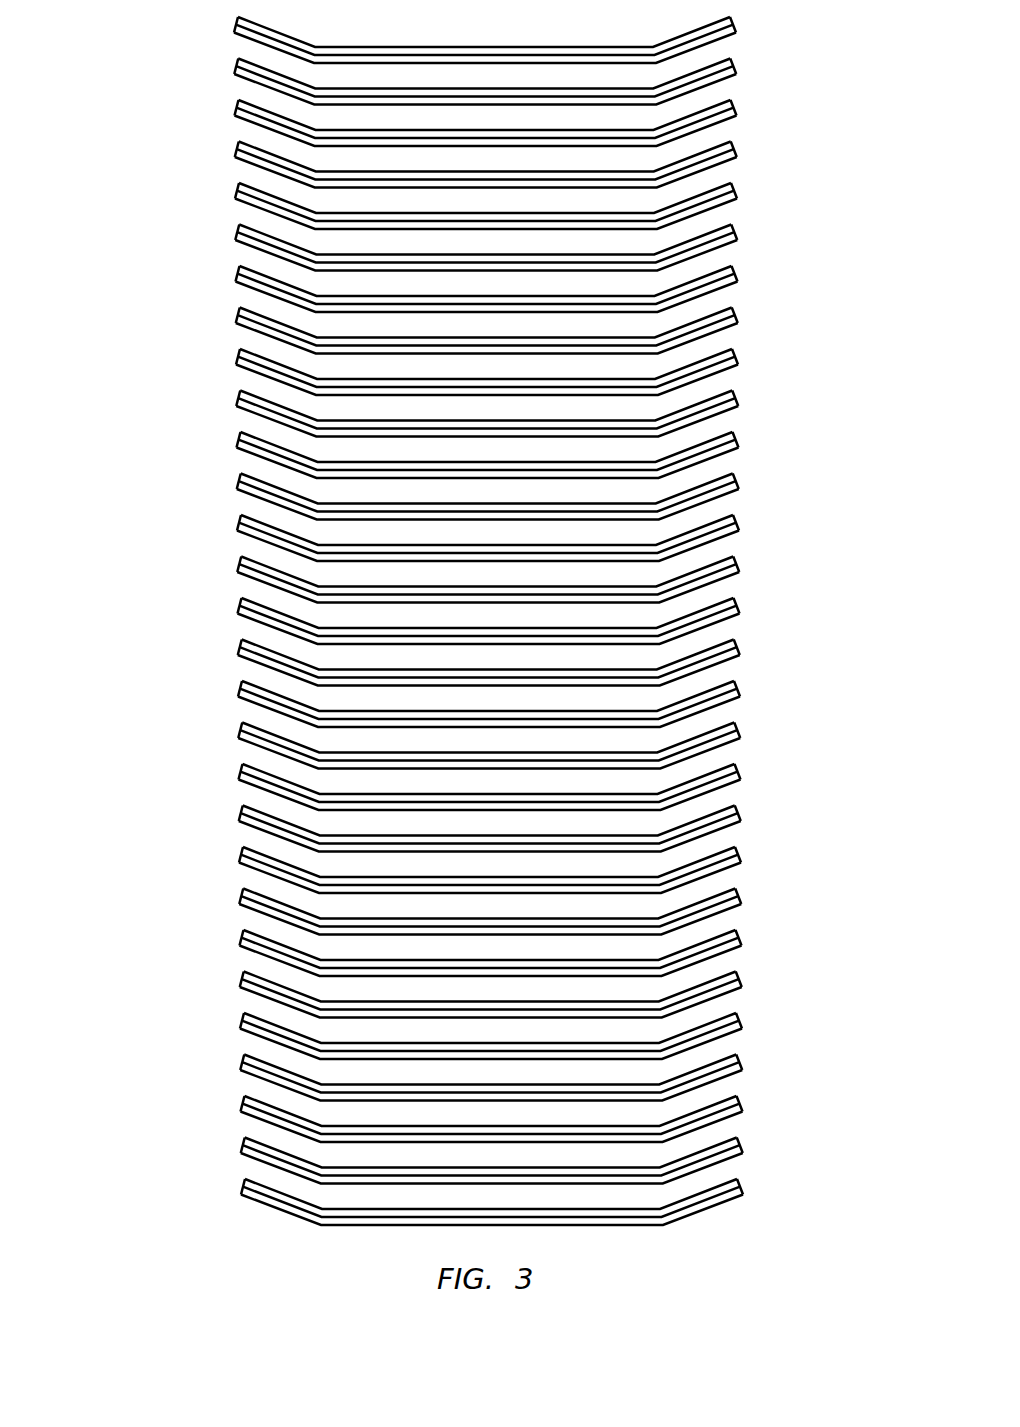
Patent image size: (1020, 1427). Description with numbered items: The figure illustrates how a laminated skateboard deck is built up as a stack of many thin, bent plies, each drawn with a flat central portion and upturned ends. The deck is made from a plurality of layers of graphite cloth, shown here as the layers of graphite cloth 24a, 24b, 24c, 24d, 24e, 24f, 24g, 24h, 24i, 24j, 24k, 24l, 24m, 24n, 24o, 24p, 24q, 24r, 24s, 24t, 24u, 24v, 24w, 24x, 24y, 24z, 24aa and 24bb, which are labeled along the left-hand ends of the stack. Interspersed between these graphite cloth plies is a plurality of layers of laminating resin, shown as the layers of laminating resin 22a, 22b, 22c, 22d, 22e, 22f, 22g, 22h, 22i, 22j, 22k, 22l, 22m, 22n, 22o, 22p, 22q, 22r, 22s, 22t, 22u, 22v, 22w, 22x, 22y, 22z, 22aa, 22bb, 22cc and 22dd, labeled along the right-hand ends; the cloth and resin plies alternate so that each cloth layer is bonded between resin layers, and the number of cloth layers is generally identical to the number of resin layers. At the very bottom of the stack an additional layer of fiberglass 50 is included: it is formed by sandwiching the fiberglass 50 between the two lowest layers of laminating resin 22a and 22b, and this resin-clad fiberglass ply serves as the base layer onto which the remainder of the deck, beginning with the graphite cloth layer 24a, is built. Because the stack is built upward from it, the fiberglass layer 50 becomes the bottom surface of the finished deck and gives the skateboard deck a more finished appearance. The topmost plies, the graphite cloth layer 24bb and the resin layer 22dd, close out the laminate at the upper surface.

The layer of laminating resin 22dd is at (554, 40).
The layer of laminating resin 22cc is at (551, 82).
The layer of laminating resin 22bb is at (555, 123).
The layer of laminating resin 22aa is at (554, 165).
The layer of laminating resin 22z is at (544, 206).
The layer of laminating resin 22y is at (545, 248).
The layer of laminating resin 22x is at (546, 289).
The layer of laminating resin 22w is at (549, 331).
The layer of laminating resin 22v is at (546, 372).
The layer of laminating resin 22u is at (546, 414).
The layer of laminating resin 22t is at (544, 455).
The layer of laminating resin 22s is at (546, 497).
The layer of laminating resin 22r is at (544, 538).
The layer of laminating resin 22q is at (547, 580).
The layer of laminating resin 22p is at (548, 621).
The layer of laminating resin 22o is at (548, 663).
The layer of laminating resin 22n is at (548, 704).
The layer of laminating resin 22m is at (553, 746).
The layer of laminating resin 22l is at (544, 787).
The layer of laminating resin 22k is at (549, 829).
The layer of laminating resin 22j is at (544, 870).
The layer of laminating resin 22i is at (544, 912).
The layer of laminating resin 22h is at (550, 953).
The layer of laminating resin 22g is at (550, 995).
The layer of laminating resin 22f is at (547, 1036).
The layer of laminating resin 22e is at (550, 1078).
The layer of laminating resin 22d is at (551, 1119).
The layer of laminating resin 22c is at (550, 1161).
The layer of laminating resin 22b is at (552, 1201).
The layer of laminating resin 22a is at (456, 1229).
The layer of graphite cloth 24bb is at (177, 45).
The layer of graphite cloth 24aa is at (148, 91).
The layer of graphite cloth 24z is at (188, 128).
The layer of graphite cloth 24y is at (158, 174).
The layer of graphite cloth 24x is at (188, 211).
The layer of graphite cloth 24w is at (155, 257).
The layer of graphite cloth 24v is at (188, 294).
The layer of graphite cloth 24u is at (157, 340).
The layer of graphite cloth 24t is at (192, 377).
The layer of graphite cloth 24s is at (160, 423).
The layer of graphite cloth 24r is at (192, 460).
The layer of graphite cloth 24q is at (158, 506).
The layer of graphite cloth 24p is at (189, 543).
The layer of graphite cloth 24o is at (160, 589).
The layer of graphite cloth 24n is at (189, 626).
The layer of graphite cloth 24m is at (155, 672).
The layer of graphite cloth 24l is at (195, 709).
The layer of graphite cloth 24k is at (162, 755).
The layer of graphite cloth 24j is at (196, 792).
The layer of graphite cloth 24i is at (166, 838).
The layer of graphite cloth 24h is at (191, 875).
The layer of graphite cloth 24g is at (161, 921).
The layer of graphite cloth 24f is at (195, 958).
The layer of graphite cloth 24e is at (162, 1004).
The layer of graphite cloth 24d is at (192, 1041).
The layer of graphite cloth 24c is at (163, 1087).
The layer of graphite cloth 24b is at (192, 1124).
The layer of graphite cloth 24a is at (163, 1170).
The layer of fiberglass 50 is at (192, 1208).